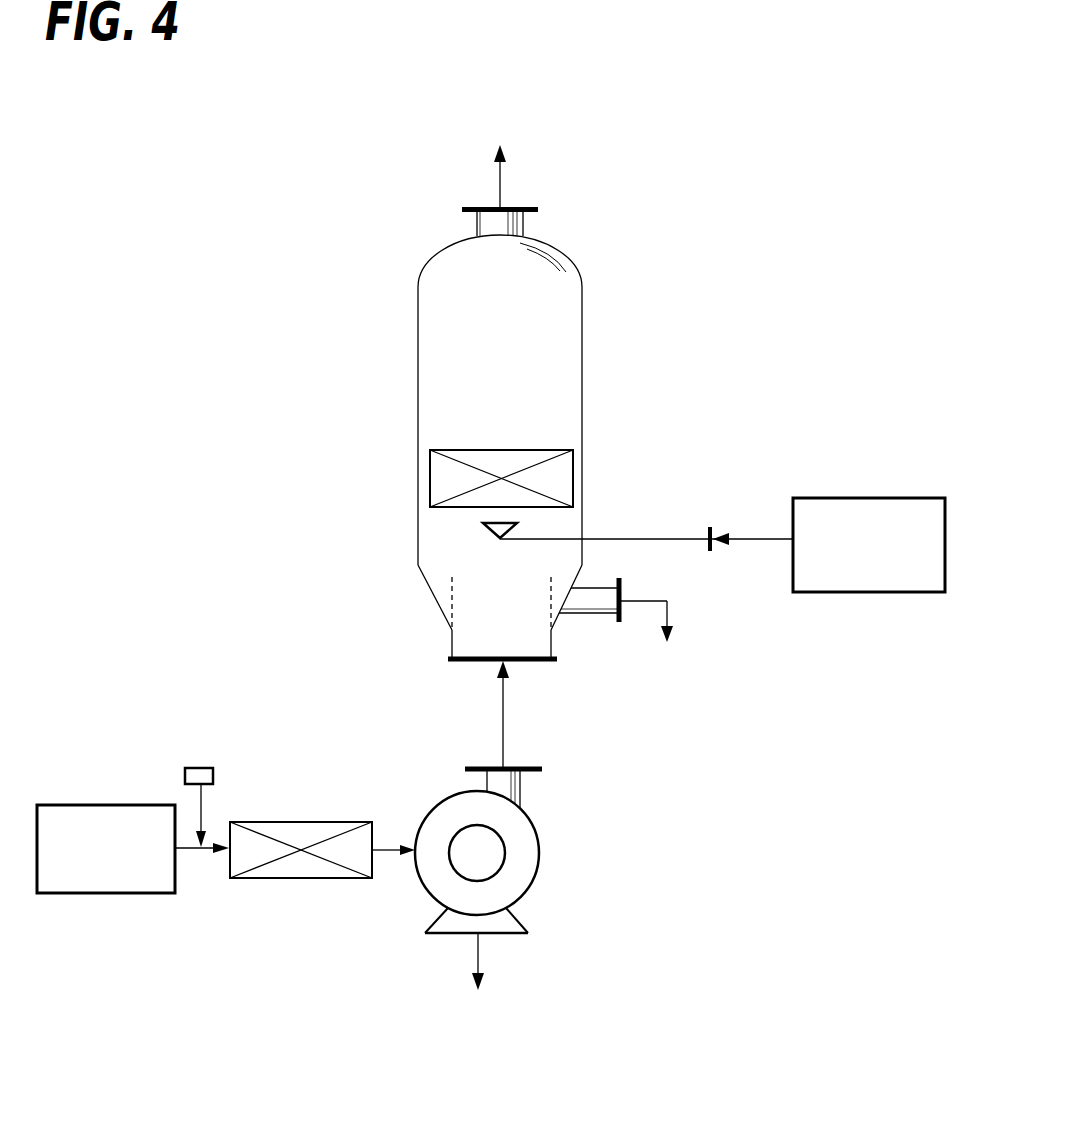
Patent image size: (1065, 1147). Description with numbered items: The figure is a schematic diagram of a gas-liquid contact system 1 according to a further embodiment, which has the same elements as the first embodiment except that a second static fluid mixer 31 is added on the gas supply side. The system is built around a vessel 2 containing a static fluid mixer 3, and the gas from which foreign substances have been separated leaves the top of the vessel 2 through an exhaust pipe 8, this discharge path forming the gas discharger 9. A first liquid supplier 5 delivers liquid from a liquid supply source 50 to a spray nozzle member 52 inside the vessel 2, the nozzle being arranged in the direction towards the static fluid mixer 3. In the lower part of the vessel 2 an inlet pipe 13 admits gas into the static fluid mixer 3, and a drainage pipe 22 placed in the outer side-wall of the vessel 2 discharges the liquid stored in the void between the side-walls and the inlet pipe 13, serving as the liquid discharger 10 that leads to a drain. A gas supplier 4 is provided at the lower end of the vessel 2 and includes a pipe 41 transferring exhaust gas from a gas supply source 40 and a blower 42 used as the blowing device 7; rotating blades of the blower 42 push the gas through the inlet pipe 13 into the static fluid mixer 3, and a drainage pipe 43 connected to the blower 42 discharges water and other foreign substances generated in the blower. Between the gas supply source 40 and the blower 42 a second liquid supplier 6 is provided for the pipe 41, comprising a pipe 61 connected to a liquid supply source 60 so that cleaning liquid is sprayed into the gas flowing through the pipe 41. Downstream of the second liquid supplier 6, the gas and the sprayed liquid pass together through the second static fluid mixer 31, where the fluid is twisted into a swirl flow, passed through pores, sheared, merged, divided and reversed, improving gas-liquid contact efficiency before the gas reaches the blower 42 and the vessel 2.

The gas-liquid contact system 1 is at (636, 133).
The vessel 2 is at (582, 340).
The static fluid mixer 3 is at (447, 478).
The gas supplier 4 is at (440, 736).
The first liquid supplier 5 is at (648, 503).
The second liquid supplier 6 is at (168, 746).
The blowing device 7 is at (625, 898).
The exhaust pipe 8 is at (515, 222).
The gas discharger 9 is at (410, 142).
The liquid discharger 10 is at (727, 668).
The inlet pipe 13 is at (453, 600).
The drainage pipe 22 is at (667, 608).
The second static fluid mixer 31 is at (303, 879).
The gas supply source 40 is at (92, 893).
The pipe 41 is at (503, 728).
The blower 42 is at (523, 853).
The drainage pipe 43 is at (478, 955).
The liquid supply source 50 is at (852, 498).
The spray nozzle member 52 is at (485, 532).
The liquid supply source 60 is at (198, 766).
The pipe 61 is at (201, 810).